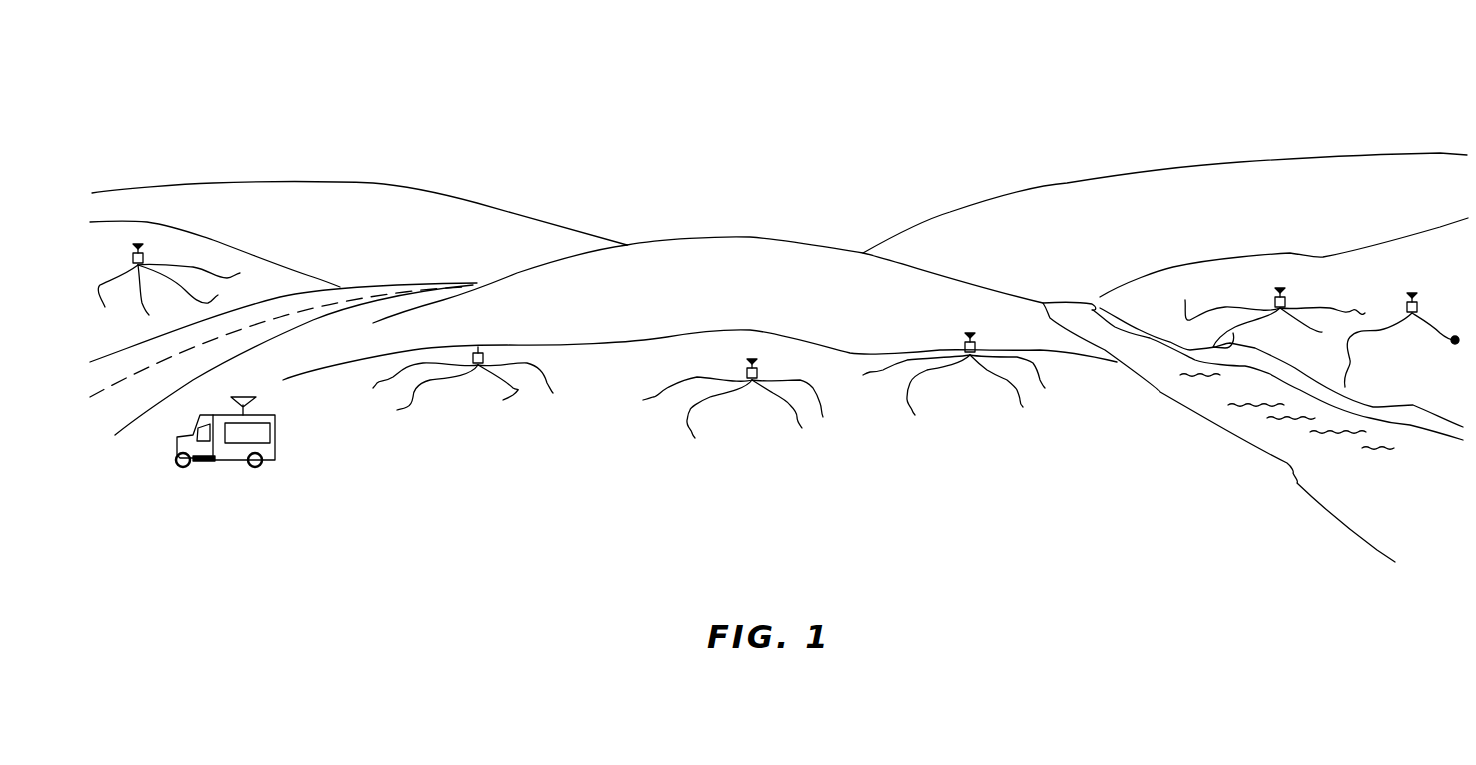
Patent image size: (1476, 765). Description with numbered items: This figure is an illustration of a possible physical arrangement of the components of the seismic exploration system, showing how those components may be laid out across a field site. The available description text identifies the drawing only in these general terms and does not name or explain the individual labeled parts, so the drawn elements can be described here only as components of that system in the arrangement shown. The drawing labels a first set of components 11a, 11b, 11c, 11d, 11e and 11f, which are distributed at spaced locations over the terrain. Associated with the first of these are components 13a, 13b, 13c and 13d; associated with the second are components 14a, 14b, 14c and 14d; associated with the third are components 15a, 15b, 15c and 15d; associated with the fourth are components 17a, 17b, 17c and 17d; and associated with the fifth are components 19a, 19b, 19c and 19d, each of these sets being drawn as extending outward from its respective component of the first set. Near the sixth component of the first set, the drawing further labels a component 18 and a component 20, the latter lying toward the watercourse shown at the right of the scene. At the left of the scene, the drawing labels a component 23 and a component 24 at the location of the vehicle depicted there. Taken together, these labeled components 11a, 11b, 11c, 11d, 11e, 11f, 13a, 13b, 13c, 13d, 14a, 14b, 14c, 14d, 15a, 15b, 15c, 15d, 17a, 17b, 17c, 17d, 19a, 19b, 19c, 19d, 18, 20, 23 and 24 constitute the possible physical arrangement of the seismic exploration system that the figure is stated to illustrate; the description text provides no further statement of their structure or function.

The remote seismic data acquisition unit 11a is at (143, 255).
The remote seismic data acquisition unit 11b is at (480, 347).
The remote seismic data acquisition unit 11c is at (773, 362).
The remote seismic data acquisition unit 11d is at (975, 343).
The remote seismic data acquisition unit 11e is at (1285, 298).
The remote seismic data acquisition unit 11f is at (1445, 296).
The geophone cable 13a is at (118, 292).
The geophone cable 13b is at (158, 294).
The geophone cable 13c is at (192, 286).
The geophone cable 13d is at (204, 274).
The geophone cable 14a is at (418, 384).
The geophone cable 14b is at (429, 400).
The geophone cable 14c is at (498, 396).
The geophone cable 14d is at (532, 383).
The geophone cable 15a is at (691, 399).
The geophone cable 15b is at (719, 416).
The geophone cable 15c is at (792, 412).
The geophone cable 15d is at (804, 403).
The geophone cable 17a is at (910, 375).
The geophone cable 17b is at (938, 391).
The geophone cable 17c is at (1011, 388).
The geophone cable 17d is at (1023, 375).
The geophone cable 19a is at (1223, 301).
The geophone cable 19b is at (1246, 328).
The geophone cable 19c is at (1318, 333).
The geophone cable 19d is at (1337, 312).
The hydrophone cable 18 is at (1378, 355).
The hydrophone 20 is at (1450, 340).
The central recording unit 23 is at (275, 436).
The recording truck 24 is at (224, 460).